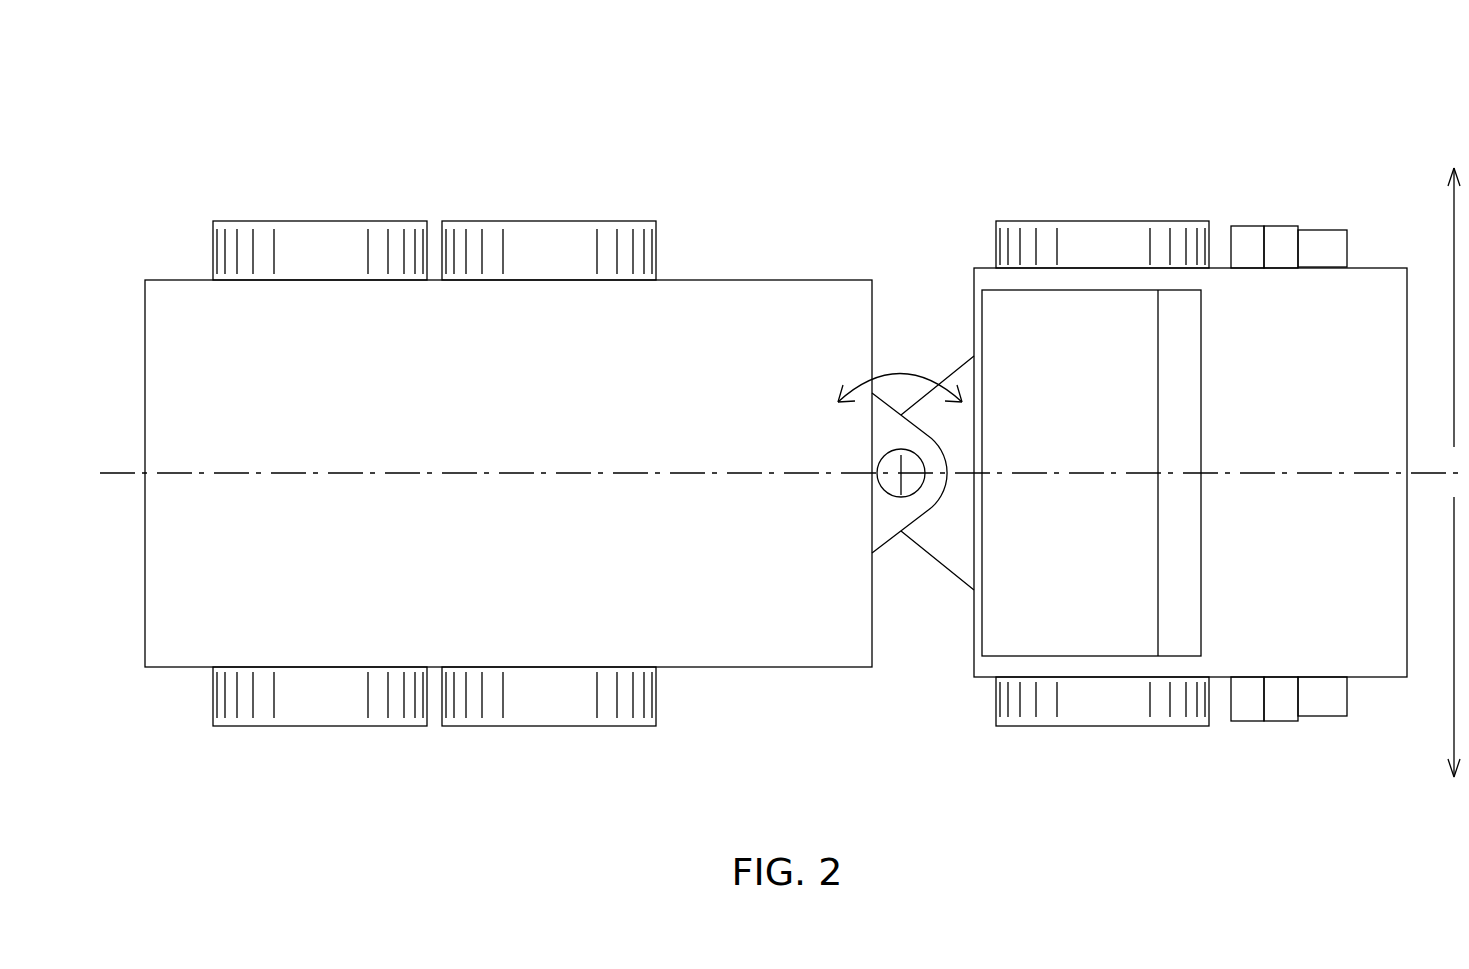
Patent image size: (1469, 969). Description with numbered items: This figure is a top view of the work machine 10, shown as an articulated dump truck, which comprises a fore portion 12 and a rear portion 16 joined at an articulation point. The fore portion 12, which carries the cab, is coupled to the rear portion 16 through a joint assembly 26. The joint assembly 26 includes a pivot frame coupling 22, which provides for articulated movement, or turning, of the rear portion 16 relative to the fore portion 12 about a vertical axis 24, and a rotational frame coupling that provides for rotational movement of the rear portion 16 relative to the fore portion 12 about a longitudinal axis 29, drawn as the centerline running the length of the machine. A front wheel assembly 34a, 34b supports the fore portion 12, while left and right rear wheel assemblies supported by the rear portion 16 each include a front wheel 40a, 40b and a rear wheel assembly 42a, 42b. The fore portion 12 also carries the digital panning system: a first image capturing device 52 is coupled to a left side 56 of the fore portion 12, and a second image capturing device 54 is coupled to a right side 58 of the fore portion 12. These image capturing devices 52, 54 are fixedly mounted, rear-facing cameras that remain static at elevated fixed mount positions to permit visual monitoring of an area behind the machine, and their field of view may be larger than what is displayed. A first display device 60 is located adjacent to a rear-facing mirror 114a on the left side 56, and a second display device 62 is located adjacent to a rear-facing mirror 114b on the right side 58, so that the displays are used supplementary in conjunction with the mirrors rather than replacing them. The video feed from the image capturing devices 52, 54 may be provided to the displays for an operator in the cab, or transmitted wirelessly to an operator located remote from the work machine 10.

The work machine 10 is at (1193, 70).
The fore portion 12 is at (1205, 140).
The rear portion 16 is at (447, 118).
The pivot frame coupling 22 is at (905, 377).
The vertical axis 24 is at (899, 478).
The joint assembly 26 is at (902, 541).
The longitudinal axis 29 is at (276, 470).
The front wheel assembly 34a is at (1052, 220).
The front wheel assembly 34b is at (1052, 727).
The front wheel 40a is at (563, 220).
The front wheel 40b is at (563, 727).
The rear wheel assembly 42a is at (326, 220).
The rear wheel assembly 42b is at (326, 727).
The first image capturing device 52 is at (1281, 238).
The second image capturing device 54 is at (1281, 706).
The left side 56 is at (1454, 240).
The right side 58 is at (1454, 705).
The first display device 60 is at (1250, 238).
The second display device 62 is at (1250, 706).
The rear-facing mirror 114a is at (1330, 245).
The rear-facing mirror 114b is at (1330, 700).